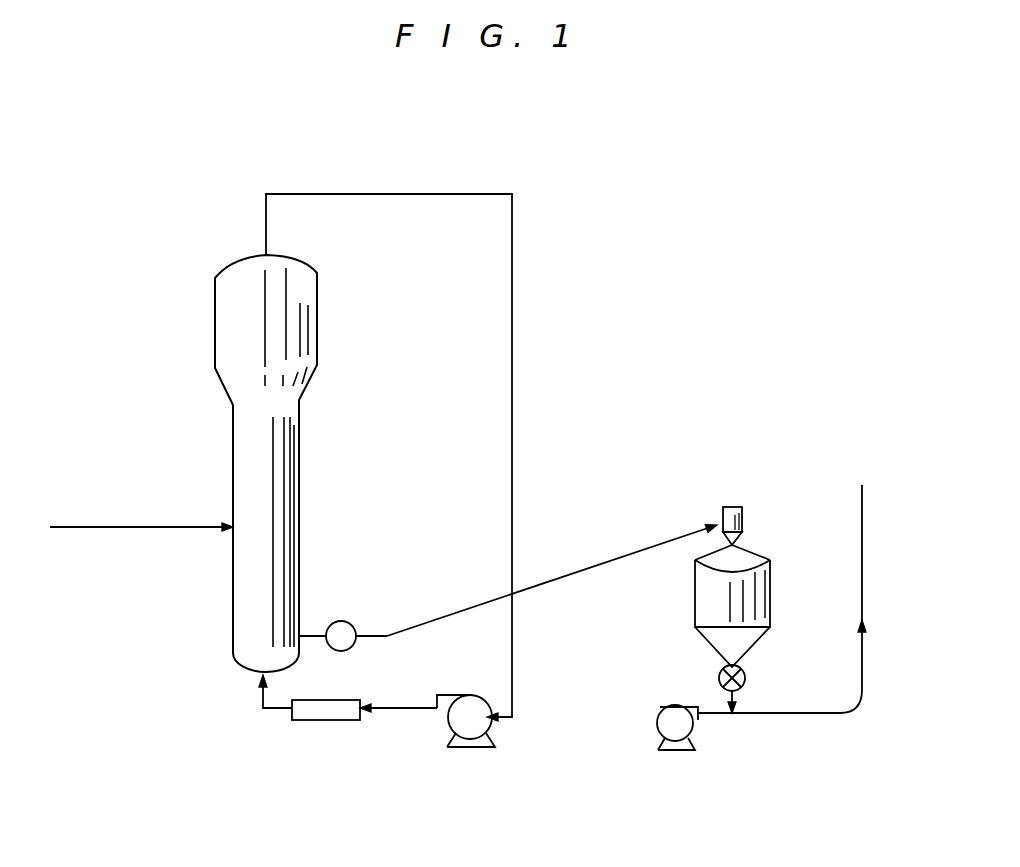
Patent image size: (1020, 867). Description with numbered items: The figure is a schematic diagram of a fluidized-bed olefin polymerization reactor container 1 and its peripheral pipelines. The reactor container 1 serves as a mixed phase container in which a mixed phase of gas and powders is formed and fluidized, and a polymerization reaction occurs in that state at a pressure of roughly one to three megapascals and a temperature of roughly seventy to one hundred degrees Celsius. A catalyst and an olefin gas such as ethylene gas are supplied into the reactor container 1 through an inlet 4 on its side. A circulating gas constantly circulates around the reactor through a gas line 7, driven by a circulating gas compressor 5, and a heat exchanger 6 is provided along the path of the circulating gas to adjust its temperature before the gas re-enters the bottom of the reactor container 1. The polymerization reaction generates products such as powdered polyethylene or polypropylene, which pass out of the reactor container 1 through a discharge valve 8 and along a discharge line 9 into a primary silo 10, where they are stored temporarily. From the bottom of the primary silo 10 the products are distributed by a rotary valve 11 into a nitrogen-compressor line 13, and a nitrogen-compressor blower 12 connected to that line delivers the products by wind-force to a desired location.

The fluidized-bed olefin polymerization reactor container 1 is at (318, 283).
The inlet 4 is at (232, 530).
The circulating gas compressor 5 is at (450, 725).
The heat exchanger 6 is at (323, 722).
The gas line 7 is at (512, 367).
The discharge valve 8 is at (350, 620).
The discharge line 9 is at (560, 570).
The primary silo 10 is at (695, 600).
The rotary valve 11 is at (718, 678).
The nitrogen-compressor blower 12 is at (655, 725).
The nitrogen-compressor line 13 is at (862, 588).